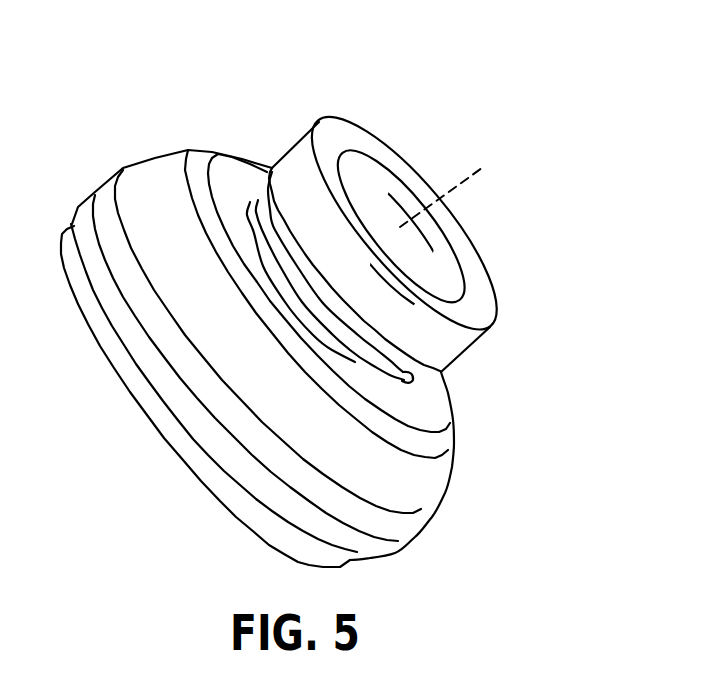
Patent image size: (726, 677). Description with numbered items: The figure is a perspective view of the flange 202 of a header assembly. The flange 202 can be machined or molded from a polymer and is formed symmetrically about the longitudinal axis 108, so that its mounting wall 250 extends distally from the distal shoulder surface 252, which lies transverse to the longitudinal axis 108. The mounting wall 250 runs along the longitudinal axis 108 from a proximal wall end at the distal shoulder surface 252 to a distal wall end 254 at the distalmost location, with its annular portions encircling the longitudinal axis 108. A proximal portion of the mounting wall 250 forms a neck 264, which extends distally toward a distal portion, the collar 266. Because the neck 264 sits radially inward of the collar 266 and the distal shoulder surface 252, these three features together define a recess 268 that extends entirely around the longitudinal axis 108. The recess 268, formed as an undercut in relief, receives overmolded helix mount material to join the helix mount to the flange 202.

The flange 202 is at (337, 308).
The longitudinal axis 108 is at (465, 182).
The mounting wall 250 is at (457, 345).
The distal shoulder surface 252 is at (421, 408).
The distal wall end 254 is at (334, 136).
The neck 264 is at (265, 215).
The collar 266 is at (294, 158).
The recess 268 is at (424, 378).